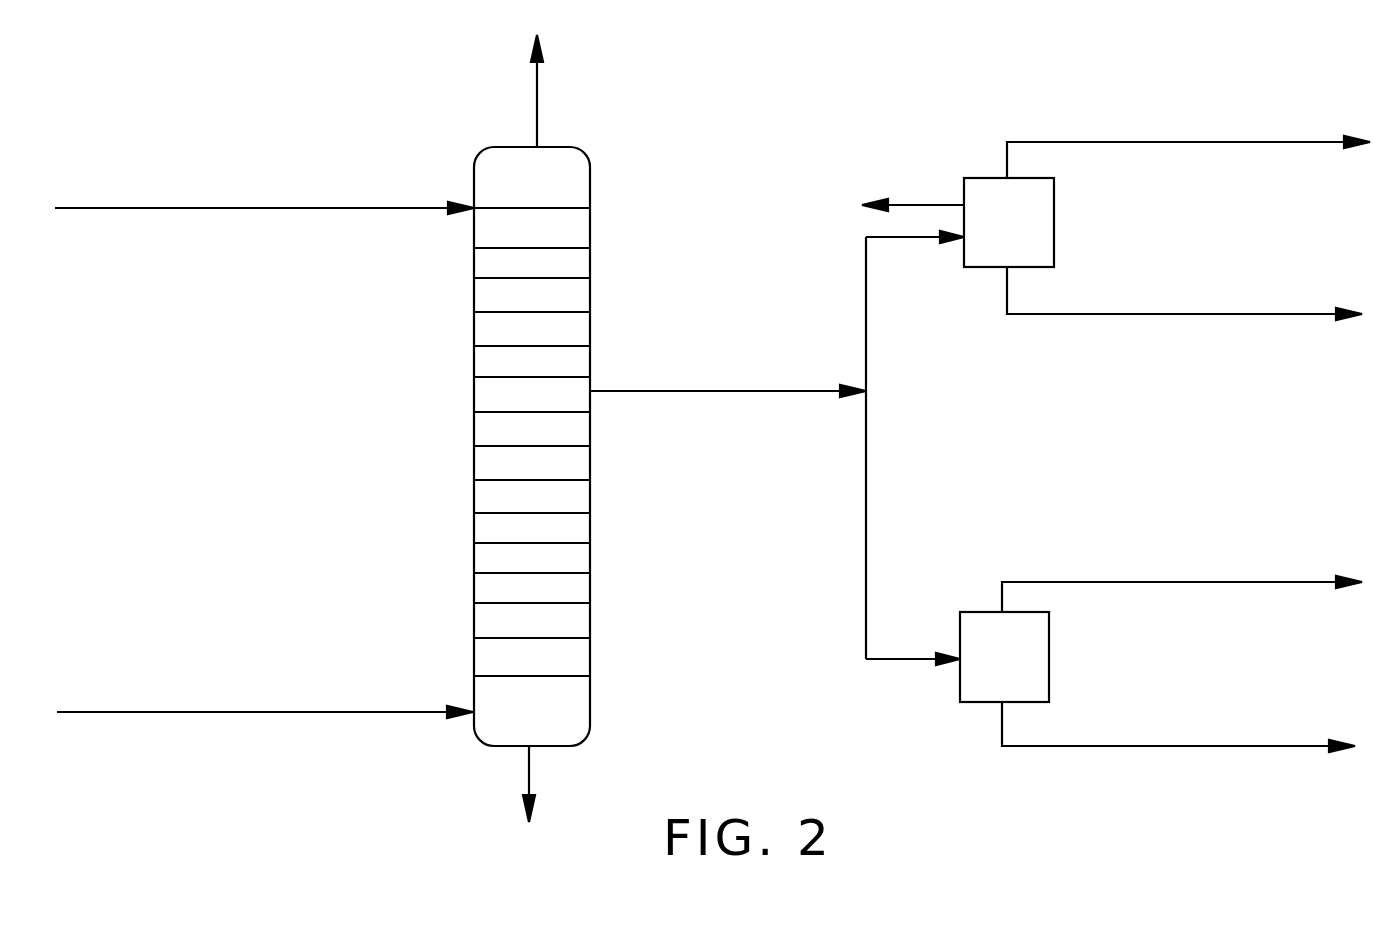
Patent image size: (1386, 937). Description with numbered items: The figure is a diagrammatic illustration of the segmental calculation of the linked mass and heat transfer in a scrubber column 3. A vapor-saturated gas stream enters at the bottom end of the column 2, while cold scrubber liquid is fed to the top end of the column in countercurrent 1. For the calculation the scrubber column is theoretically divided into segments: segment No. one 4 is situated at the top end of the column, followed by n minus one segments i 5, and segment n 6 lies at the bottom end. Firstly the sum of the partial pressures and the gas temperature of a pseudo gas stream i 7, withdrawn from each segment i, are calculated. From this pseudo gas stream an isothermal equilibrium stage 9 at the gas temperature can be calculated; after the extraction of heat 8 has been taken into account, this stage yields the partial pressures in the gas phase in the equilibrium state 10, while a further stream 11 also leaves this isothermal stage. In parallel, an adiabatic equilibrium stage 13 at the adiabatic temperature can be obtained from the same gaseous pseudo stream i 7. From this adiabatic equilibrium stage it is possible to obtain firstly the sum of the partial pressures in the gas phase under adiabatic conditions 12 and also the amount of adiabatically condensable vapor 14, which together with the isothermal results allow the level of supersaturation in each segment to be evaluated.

The cold scrubber liquid feed 1 is at (264, 191).
The vapor-saturated gas stream inlet 2 is at (265, 730).
The scrubber column 3 is at (472, 745).
The segment No. 1 4 is at (532, 277).
The segments i 5 is at (532, 445).
The segment n 6 is at (532, 609).
The pseudo gas stream i 7 is at (728, 448).
The extraction of heat 8 is at (900, 206).
The isothermal equilibrium stage 9 is at (1058, 231).
The partial pressures in the gas phase in the equilibrium state 10 is at (1188, 135).
The product stream 11 is at (1184, 316).
The sum of partial pressures in the gas phase (adiabatic) 12 is at (1182, 574).
The adiabatic equilibrium stage 13 is at (998, 657).
The amount of adiabatically condensable vapor 14 is at (1178, 747).